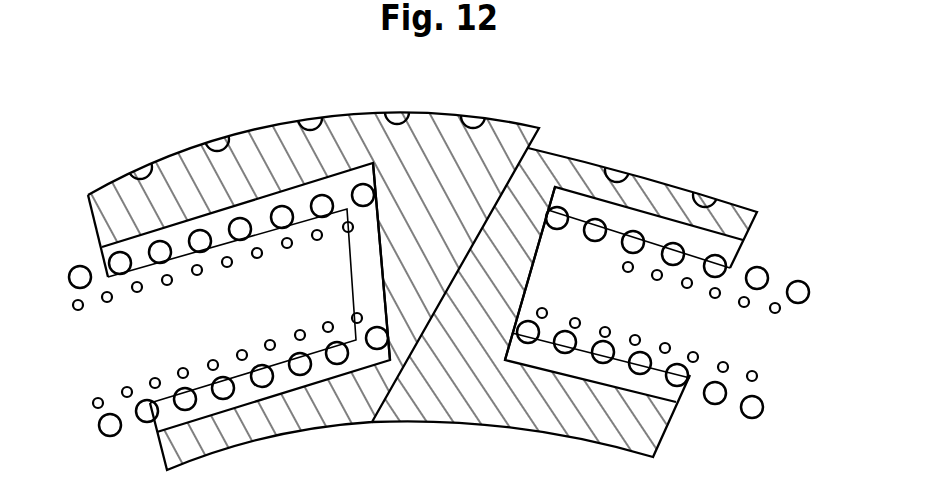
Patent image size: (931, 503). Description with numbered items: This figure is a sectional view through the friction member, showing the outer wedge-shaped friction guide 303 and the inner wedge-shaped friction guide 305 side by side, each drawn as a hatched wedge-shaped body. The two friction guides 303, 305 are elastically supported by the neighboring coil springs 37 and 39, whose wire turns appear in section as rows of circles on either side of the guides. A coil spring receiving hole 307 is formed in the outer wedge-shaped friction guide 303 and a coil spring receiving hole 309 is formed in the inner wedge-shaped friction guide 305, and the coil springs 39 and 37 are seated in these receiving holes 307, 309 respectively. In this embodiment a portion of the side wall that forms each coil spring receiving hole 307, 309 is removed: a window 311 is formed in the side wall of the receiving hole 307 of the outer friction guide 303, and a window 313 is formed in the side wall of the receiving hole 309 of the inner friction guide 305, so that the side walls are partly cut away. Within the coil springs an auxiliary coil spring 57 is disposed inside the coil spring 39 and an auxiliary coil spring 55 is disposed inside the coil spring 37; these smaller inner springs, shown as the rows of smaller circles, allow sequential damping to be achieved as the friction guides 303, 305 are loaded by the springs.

The outer wedge-shaped friction guide 303 is at (290, 425).
The inner wedge-shaped friction guide 305 is at (490, 426).
The coil spring receiving hole 307 is at (188, 333).
The coil spring receiving hole 309 is at (701, 334).
The window 311 is at (142, 275).
The window 313 is at (693, 262).
The coil spring 39 is at (81, 266).
The auxiliary coil spring 57 is at (96, 398).
The coil spring 37 is at (802, 279).
The auxiliary coil spring 55 is at (755, 371).